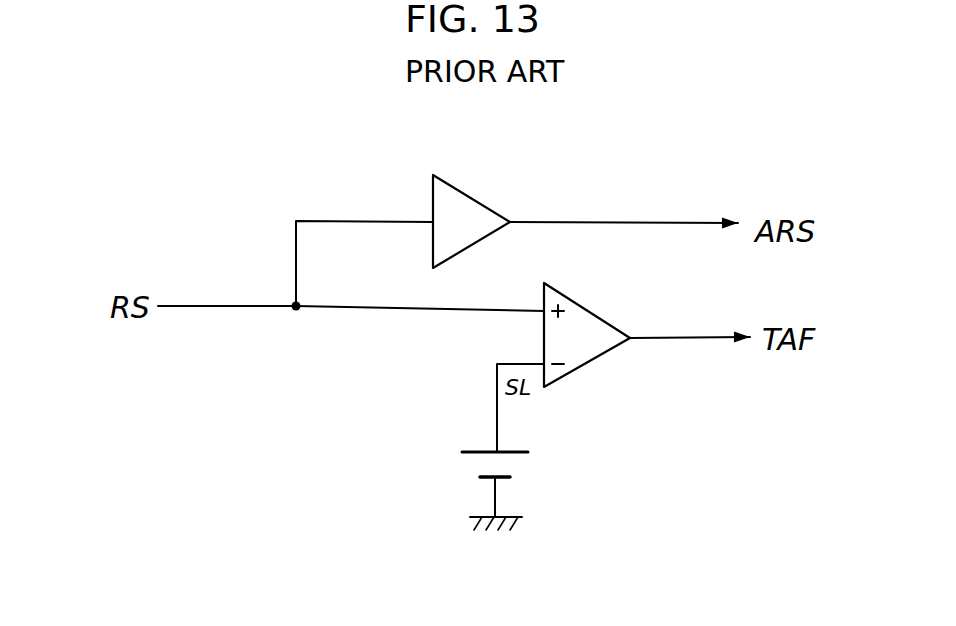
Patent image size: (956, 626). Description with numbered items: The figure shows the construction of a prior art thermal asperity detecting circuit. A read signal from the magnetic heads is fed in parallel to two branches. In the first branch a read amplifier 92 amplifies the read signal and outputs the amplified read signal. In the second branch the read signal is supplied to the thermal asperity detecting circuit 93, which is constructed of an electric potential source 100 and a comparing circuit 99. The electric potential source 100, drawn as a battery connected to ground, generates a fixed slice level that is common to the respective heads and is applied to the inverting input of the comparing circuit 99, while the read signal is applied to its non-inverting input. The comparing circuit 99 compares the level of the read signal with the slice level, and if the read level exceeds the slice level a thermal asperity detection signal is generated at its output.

The read amplifier 92 is at (488, 205).
The thermal asperity detecting circuit 93 is at (622, 339).
The comparing circuit 99 is at (580, 367).
The electric potential source 100 is at (522, 467).